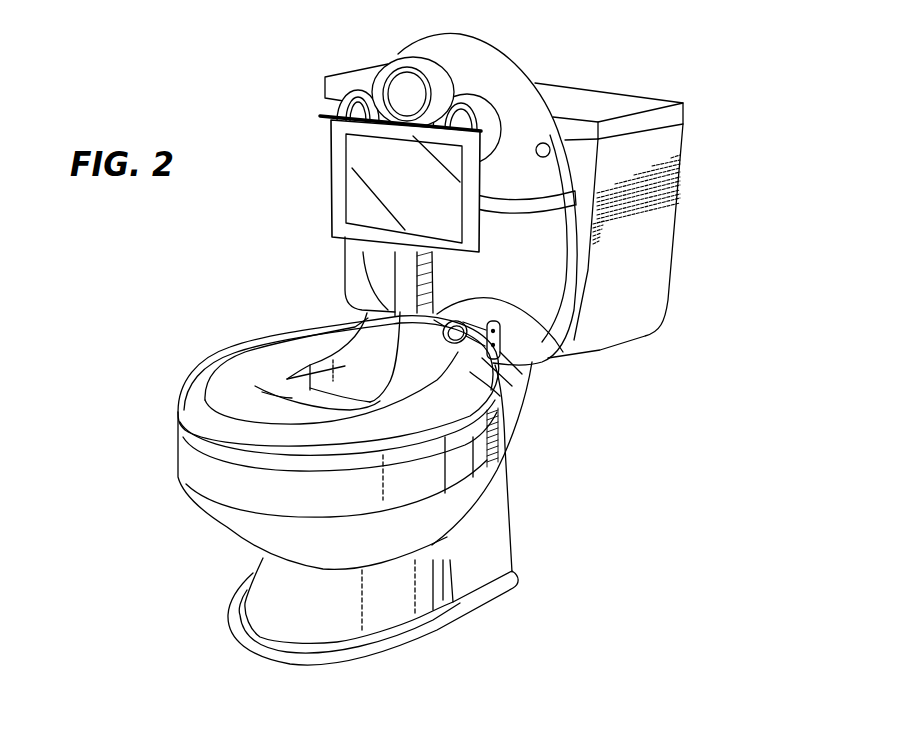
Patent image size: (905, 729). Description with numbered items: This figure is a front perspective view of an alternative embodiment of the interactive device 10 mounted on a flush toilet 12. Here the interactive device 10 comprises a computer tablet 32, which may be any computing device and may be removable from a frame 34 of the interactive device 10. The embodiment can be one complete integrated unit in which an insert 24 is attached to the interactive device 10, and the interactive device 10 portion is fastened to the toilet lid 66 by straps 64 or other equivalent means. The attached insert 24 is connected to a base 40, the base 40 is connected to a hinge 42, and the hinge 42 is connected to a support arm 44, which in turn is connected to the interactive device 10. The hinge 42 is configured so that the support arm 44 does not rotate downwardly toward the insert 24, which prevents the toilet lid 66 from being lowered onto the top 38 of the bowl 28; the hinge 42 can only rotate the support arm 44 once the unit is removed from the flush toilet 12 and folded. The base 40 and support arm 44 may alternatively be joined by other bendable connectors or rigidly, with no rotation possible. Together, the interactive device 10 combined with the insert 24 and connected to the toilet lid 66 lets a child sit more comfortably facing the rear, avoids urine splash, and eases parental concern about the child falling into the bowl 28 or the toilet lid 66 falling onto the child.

The interactive device 10 is at (478, 85).
The flush toilet 12 is at (493, 525).
The insert 24 is at (490, 367).
The bowl 28 is at (250, 532).
The computer tablet 32 is at (474, 178).
The frame 34 is at (330, 122).
The top 38 is at (178, 430).
The base 40 is at (500, 357).
The hinge 42 is at (503, 363).
The support arm 44 is at (372, 294).
The straps 64 is at (517, 203).
The toilet lid 66 is at (373, 264).